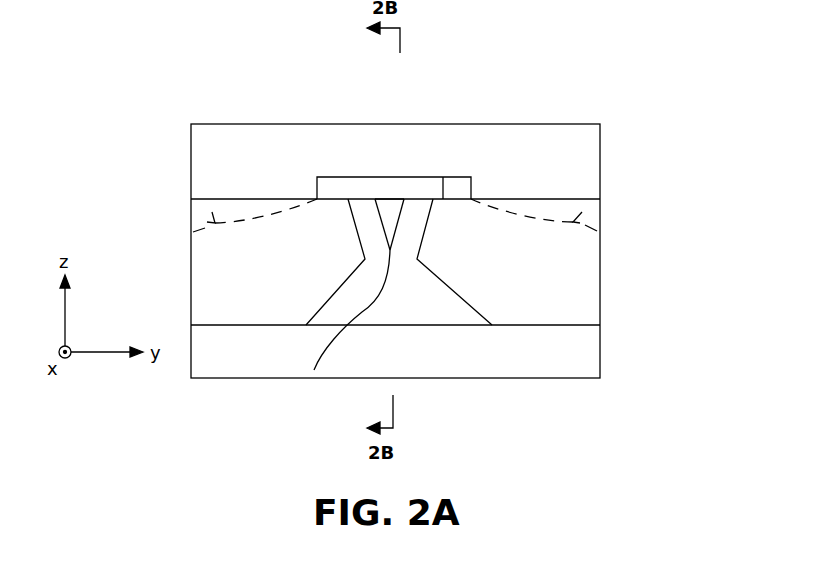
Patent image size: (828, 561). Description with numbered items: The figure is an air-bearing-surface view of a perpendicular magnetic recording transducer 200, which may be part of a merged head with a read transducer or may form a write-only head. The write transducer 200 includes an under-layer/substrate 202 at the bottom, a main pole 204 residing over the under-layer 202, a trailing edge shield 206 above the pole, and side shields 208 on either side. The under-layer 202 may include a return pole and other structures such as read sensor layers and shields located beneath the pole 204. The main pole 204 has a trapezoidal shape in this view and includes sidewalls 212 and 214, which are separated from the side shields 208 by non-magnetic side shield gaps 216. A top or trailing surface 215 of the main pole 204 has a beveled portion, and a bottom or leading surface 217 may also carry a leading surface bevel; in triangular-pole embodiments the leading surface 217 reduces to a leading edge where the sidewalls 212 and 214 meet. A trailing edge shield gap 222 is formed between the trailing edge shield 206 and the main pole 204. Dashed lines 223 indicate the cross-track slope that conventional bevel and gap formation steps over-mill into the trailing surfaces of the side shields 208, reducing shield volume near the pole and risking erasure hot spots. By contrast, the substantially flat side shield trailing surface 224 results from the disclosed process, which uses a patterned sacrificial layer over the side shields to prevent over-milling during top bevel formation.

The perpendicular magnetic recording transducer 200 is at (183, 85).
The under-layer/substrate 202 is at (548, 360).
The main pole 204 is at (390, 210).
The trailing edge shield 206 is at (550, 159).
The side shields 208 is at (263, 238).
The sidewall 212 is at (380, 227).
The sidewall 214 is at (400, 228).
The top (trailing) surface 215 is at (445, 177).
The side shield gaps 216 is at (378, 248).
The bottom (leading) surface 217 is at (314, 370).
The trailing edge shield gap 222 is at (390, 187).
The cross-track slope 223 is at (212, 212).
The side shield trailing surface 224 is at (260, 199).